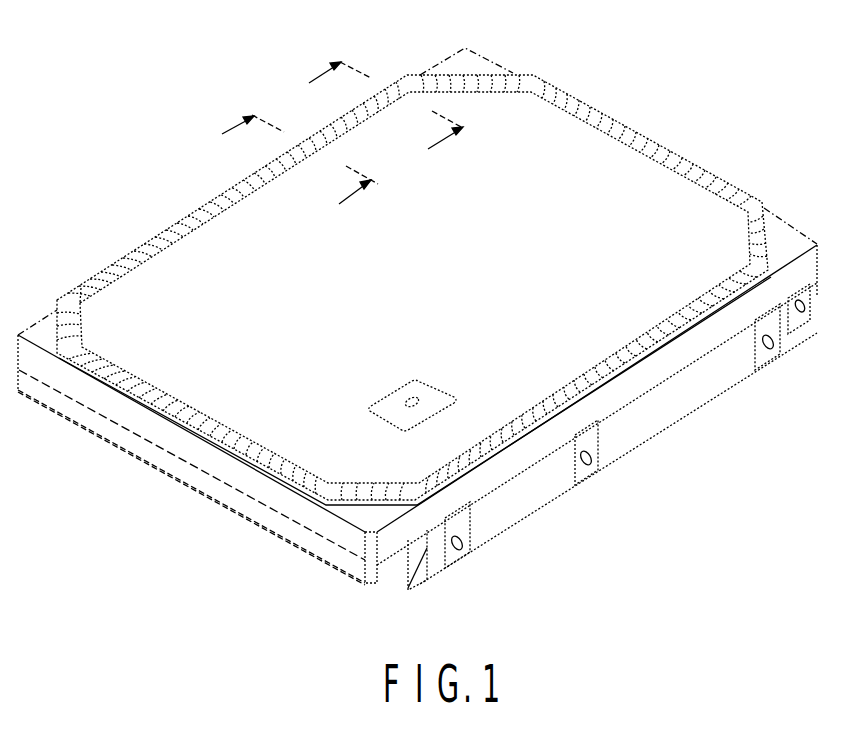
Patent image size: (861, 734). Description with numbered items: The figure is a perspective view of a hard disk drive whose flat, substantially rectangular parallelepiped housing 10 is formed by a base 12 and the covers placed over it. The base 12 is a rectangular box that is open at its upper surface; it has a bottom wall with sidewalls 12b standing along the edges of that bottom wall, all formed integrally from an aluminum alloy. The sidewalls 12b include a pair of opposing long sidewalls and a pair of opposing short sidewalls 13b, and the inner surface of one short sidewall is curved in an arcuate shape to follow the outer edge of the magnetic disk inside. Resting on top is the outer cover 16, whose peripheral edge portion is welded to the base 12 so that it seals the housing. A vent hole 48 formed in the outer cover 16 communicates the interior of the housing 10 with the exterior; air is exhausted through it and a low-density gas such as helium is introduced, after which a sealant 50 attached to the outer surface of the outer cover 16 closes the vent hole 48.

The housing 10 is at (118, 224).
The base 12 is at (643, 414).
The sidewalls 12b is at (518, 502).
The short sidewalls 13b is at (249, 506).
The outer cover 16 is at (585, 152).
The vent hole 48 is at (408, 408).
The sealant 50 is at (428, 383).